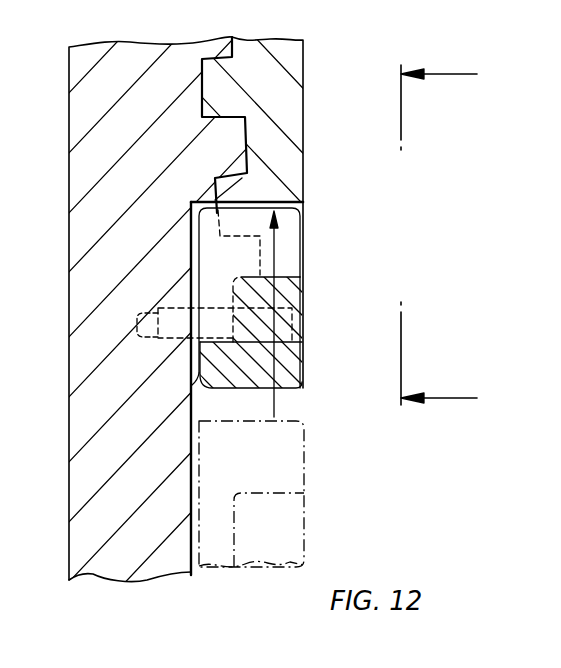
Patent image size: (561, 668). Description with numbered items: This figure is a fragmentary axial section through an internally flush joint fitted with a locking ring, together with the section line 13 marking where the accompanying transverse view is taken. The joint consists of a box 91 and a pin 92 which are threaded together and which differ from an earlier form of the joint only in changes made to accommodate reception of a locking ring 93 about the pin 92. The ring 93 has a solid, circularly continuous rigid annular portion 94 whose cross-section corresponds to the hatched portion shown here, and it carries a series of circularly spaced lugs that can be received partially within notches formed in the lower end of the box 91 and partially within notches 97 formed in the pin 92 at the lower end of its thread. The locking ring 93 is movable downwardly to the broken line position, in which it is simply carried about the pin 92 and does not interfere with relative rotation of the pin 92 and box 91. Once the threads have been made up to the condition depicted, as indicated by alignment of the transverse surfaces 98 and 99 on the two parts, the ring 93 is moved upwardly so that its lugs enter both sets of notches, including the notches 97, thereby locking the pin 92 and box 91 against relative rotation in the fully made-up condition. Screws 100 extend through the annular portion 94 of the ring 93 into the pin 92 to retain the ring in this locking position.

The box 91 is at (293, 100).
The pin 92 is at (97, 190).
The locking ring 93 is at (298, 366).
The annular portion 94 is at (258, 380).
The notches 97 is at (192, 217).
The transverse surface 98 is at (300, 271).
The transverse surface 99 is at (256, 268).
The screws 100 is at (176, 342).
The section line 13- 13 is at (444, 235).